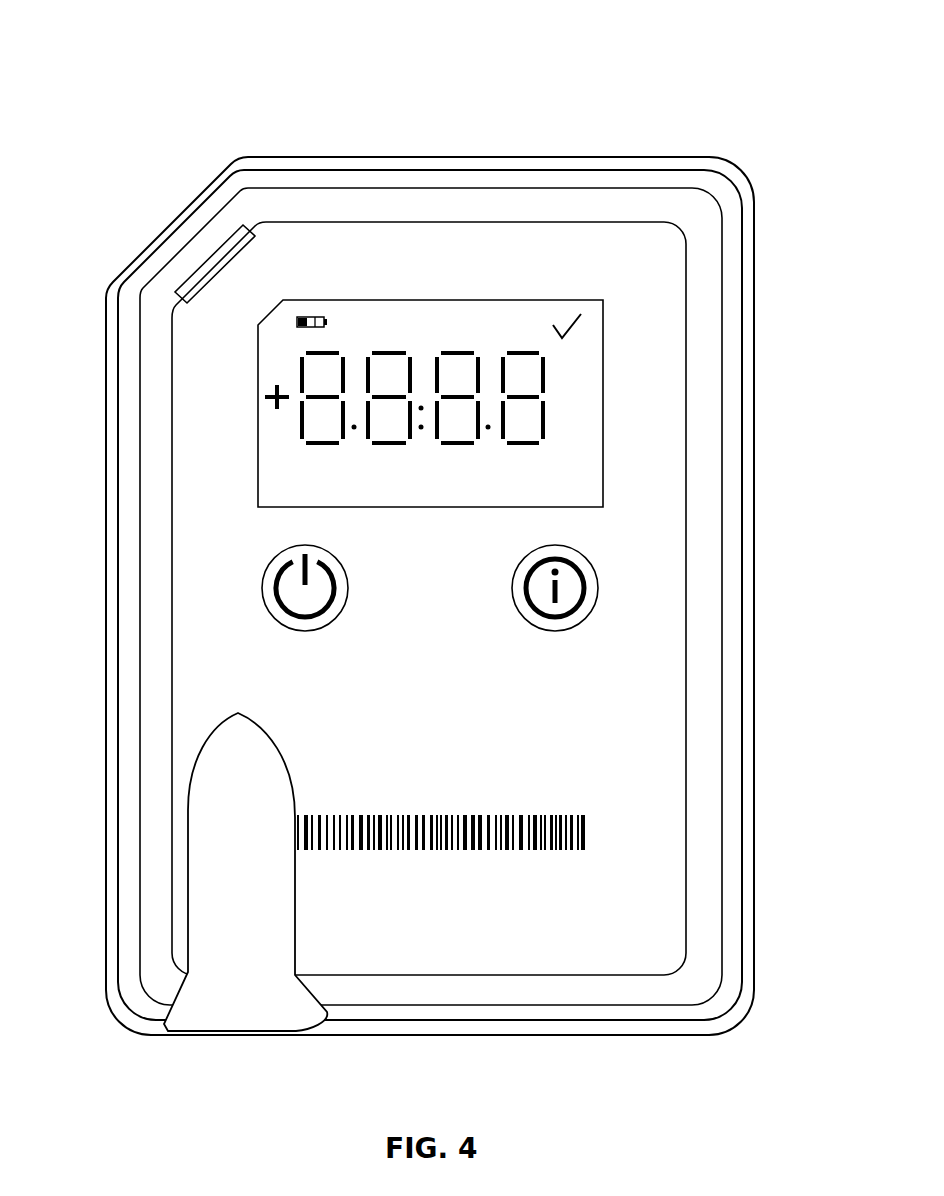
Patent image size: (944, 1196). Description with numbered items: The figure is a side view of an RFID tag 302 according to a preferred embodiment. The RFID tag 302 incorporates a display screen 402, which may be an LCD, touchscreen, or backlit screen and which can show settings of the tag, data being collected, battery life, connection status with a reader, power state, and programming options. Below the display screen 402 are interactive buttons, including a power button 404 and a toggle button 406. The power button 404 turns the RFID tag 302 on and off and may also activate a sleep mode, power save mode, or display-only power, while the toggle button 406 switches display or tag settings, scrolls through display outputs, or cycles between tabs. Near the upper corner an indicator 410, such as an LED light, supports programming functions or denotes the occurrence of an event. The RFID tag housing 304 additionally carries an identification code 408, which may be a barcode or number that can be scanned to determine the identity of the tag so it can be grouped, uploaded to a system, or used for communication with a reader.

The RFID tag 302 is at (113, 218).
The RFID tag housing 304 is at (592, 735).
The display screen 402 is at (592, 350).
The power button 404 is at (262, 583).
The toggle button 406 is at (588, 558).
The identification code 408 is at (600, 833).
The indicator 410 is at (234, 236).